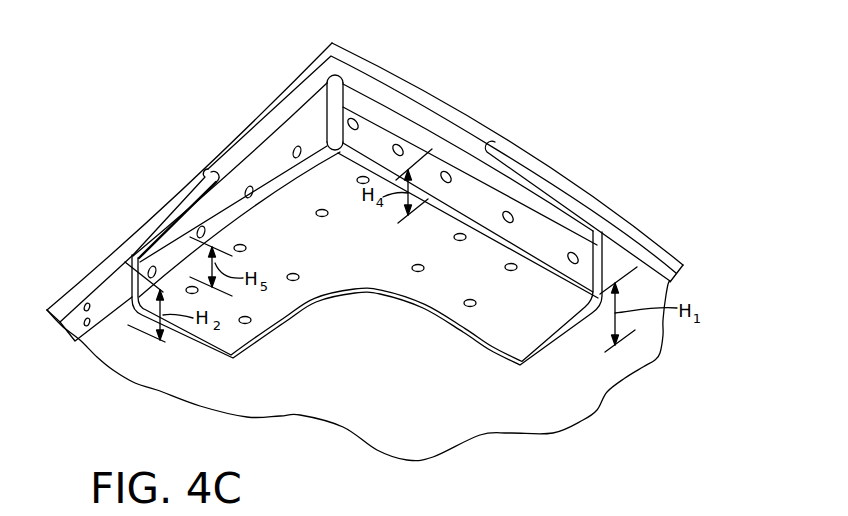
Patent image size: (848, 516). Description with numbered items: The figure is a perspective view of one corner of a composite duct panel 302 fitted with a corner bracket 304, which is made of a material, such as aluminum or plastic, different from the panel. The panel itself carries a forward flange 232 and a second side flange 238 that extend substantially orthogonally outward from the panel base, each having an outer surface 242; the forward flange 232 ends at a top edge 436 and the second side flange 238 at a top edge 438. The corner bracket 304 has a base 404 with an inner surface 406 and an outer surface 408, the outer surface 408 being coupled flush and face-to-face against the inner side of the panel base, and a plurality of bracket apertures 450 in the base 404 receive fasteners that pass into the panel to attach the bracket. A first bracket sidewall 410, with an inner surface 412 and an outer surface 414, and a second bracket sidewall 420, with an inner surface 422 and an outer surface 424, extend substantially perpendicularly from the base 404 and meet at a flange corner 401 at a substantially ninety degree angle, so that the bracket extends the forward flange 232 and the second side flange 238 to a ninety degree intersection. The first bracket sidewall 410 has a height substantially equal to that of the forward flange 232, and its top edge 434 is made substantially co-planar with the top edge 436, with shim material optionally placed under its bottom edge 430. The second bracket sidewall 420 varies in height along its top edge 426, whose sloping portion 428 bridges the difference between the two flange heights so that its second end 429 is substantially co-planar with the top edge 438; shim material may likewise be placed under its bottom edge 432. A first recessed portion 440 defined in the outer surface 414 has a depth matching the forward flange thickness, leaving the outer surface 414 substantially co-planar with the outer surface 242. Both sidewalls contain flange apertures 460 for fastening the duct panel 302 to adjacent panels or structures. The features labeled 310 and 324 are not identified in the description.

The forward flange 232 is at (642, 231).
The second side flange 238 is at (117, 253).
The outer surface 242 is at (567, 170).
The composite duct panel 302 is at (358, 402).
The corner bracket 304 is at (445, 172).
The rib 310 is at (492, 138).
The lip 324 is at (200, 174).
The flange corner 401 is at (333, 42).
The base 404 is at (523, 323).
The inner surface 406 is at (348, 291).
The outer surface 408 is at (353, 296).
The first bracket sidewall 410 is at (500, 152).
The inner surface 412 is at (372, 99).
The outer surface 414 is at (388, 87).
The second bracket sidewall 420 is at (287, 136).
The inner surface 422 is at (267, 140).
The outer surface 424 is at (279, 100).
The top edge 426 is at (302, 78).
The sloping portion 428 is at (275, 107).
The second end 429 is at (225, 173).
The bottom edge 430 is at (587, 315).
The bottom edge 432 is at (141, 318).
The top edge 434 is at (445, 100).
The top edge 436 is at (617, 223).
The top edge 438 is at (142, 219).
The first recessed portion 440 is at (531, 231).
The bracket apertures 450 is at (318, 246).
The flange apertures 460 is at (447, 168).